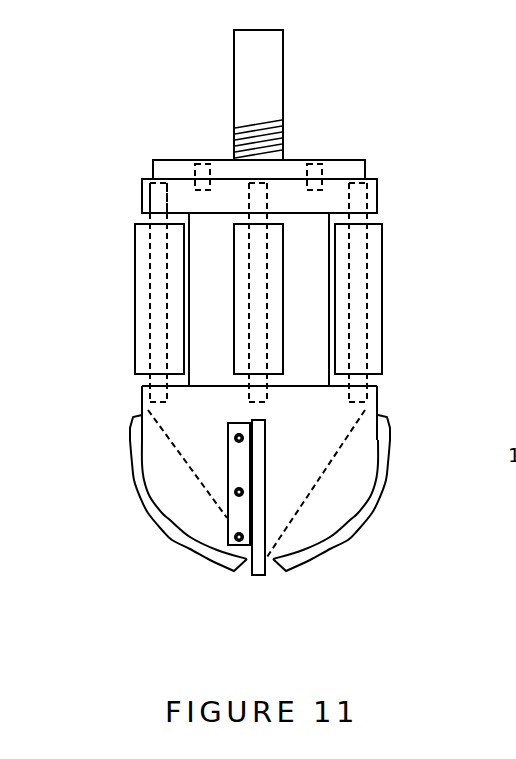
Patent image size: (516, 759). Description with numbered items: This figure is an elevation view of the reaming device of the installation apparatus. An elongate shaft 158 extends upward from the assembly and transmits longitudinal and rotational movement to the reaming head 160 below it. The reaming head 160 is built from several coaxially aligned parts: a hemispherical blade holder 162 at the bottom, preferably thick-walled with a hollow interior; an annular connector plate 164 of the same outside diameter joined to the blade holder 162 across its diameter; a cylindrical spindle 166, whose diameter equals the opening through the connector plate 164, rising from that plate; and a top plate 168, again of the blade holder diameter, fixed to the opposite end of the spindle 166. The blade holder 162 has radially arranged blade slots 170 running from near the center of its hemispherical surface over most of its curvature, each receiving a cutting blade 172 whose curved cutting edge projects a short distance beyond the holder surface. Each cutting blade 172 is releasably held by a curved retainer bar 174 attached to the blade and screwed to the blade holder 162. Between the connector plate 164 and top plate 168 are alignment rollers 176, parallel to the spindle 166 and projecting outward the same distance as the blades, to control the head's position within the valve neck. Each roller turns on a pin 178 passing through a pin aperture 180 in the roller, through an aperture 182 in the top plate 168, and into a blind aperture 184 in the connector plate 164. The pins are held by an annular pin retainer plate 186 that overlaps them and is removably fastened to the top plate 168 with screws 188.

The elongate shaft 158 is at (260, 77).
The reaming head 160 is at (393, 326).
The hemispherical blade holder 162 is at (328, 419).
The annular connector plate 164 is at (210, 405).
The cylindrical spindle 166 is at (308, 287).
The top plate 168 is at (221, 157).
The blade slots 170 is at (143, 473).
The cutting blade 172 is at (162, 527).
The curved retainer bar 174 is at (175, 498).
The alignment rollers 176 is at (140, 307).
The pins 178 is at (155, 259).
The pin aperture 180 is at (145, 348).
The aperture 182 is at (152, 199).
The aperture 184 is at (360, 397).
The annular pin retainer plate 186 is at (310, 158).
The screws 188 is at (297, 143).